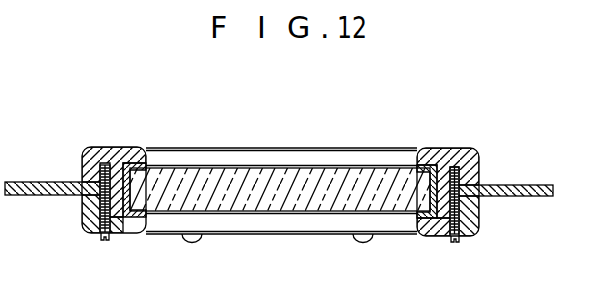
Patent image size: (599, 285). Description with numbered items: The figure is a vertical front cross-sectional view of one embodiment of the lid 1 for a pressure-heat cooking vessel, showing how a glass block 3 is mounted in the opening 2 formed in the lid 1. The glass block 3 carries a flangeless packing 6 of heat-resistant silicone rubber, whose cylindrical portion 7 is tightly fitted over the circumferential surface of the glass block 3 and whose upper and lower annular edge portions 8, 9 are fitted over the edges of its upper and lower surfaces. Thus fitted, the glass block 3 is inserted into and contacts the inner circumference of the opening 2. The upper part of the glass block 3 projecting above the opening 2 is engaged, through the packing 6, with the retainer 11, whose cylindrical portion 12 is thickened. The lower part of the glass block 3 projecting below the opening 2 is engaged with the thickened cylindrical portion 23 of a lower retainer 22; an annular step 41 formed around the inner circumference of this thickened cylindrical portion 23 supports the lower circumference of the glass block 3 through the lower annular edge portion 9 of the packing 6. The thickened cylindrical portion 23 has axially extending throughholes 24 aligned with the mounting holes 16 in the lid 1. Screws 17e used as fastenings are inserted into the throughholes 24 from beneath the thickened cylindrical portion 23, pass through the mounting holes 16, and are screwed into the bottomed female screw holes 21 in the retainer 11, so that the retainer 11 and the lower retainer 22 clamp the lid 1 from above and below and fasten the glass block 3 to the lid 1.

The lid 1 is at (547, 185).
The opening 2 is at (430, 188).
The glass block 3 is at (305, 182).
The packing 6 is at (450, 167).
The cylindrical portion 7 is at (140, 192).
The annular edge portion 8 is at (423, 166).
The annular edge portion 9 is at (415, 233).
The retainer 11 is at (113, 150).
The cylindrical portion 12 is at (85, 178).
The mounting holes 16 is at (100, 192).
The screws 17e is at (107, 241).
The bottomed female screw holes 21 is at (461, 173).
The lower retainer 22 is at (463, 234).
The thickened cylindrical portion 23 is at (472, 218).
The throughholes 24 is at (102, 167).
The annular step 41 is at (163, 233).